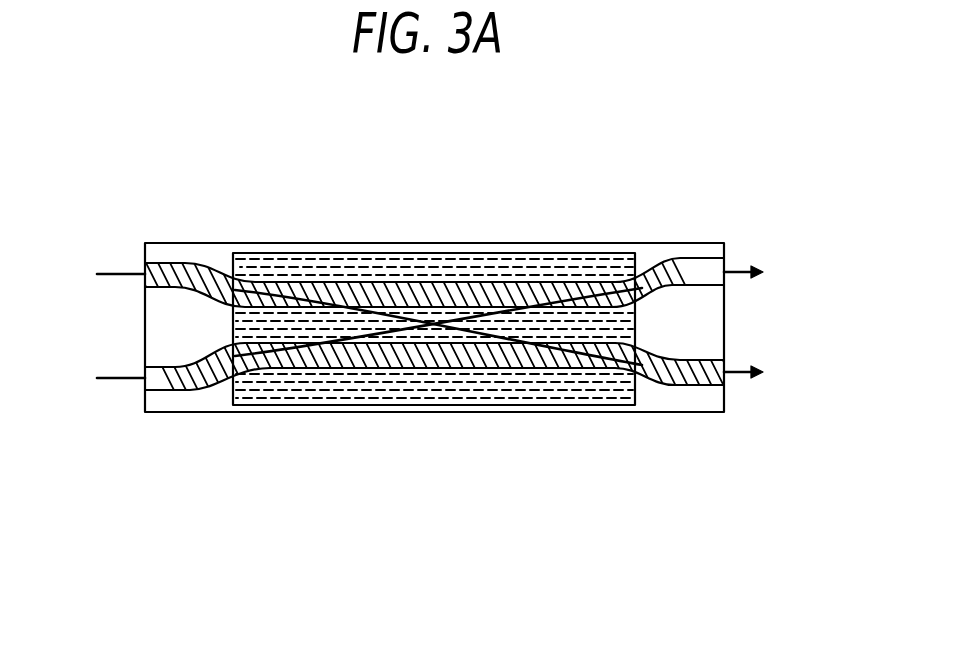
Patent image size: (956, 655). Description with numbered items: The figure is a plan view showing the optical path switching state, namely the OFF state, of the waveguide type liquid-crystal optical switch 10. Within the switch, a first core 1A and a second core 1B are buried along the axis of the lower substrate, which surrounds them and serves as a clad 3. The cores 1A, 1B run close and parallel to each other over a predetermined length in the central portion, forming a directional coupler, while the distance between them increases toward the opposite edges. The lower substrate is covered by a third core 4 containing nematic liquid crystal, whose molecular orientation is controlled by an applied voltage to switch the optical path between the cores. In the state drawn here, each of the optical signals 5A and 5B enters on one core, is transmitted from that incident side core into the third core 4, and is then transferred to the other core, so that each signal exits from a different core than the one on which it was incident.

The waveguide type liquid-crystal optical switch 10 is at (566, 166).
The clad 3 is at (717, 303).
The third core 4 is at (632, 328).
The first core 1A is at (678, 258).
The second core 1B is at (683, 387).
The optical signal 5A is at (125, 268).
The optical signal 5B is at (122, 385).